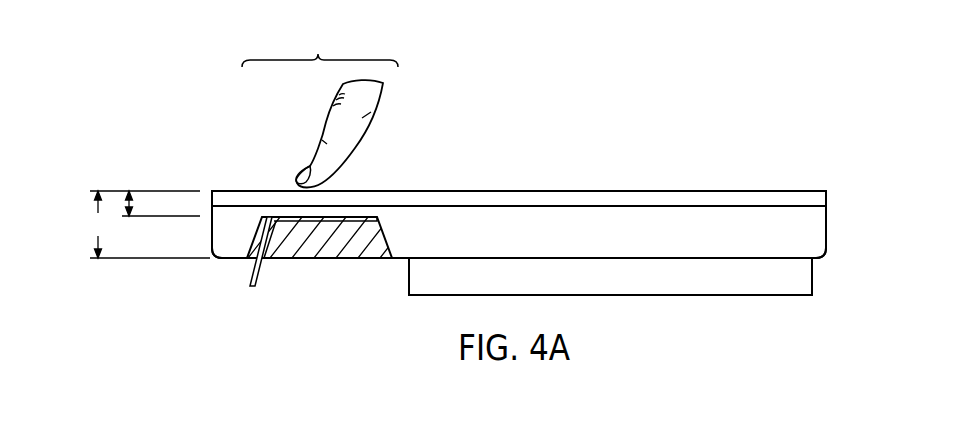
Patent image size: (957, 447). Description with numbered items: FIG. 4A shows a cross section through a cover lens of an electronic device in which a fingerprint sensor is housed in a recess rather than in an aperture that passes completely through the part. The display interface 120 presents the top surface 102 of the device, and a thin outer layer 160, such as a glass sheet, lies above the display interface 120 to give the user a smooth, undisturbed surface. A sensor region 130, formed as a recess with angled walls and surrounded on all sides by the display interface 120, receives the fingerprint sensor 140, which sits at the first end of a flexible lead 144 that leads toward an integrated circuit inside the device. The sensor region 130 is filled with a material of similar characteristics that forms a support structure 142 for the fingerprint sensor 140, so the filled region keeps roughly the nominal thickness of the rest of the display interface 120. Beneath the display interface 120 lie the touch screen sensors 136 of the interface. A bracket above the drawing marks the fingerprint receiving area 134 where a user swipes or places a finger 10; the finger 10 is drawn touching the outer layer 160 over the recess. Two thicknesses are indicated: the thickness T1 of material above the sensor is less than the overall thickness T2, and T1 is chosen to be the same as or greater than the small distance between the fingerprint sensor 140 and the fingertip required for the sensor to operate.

The finger 10 is at (360, 138).
The top surface 102 is at (603, 190).
The display interface 120 is at (812, 235).
The sensor region 130 is at (287, 259).
The fingerprint receiving area 134 is at (320, 47).
The touch screen sensors 136 is at (804, 281).
The fingerprint sensor 140 is at (275, 257).
The support structure 142 is at (318, 240).
The flexible lead 144 is at (250, 279).
The outer layer 160 is at (812, 200).
The thickness t1 T1 is at (124, 184).
The thickness t2 T2 is at (149, 224).